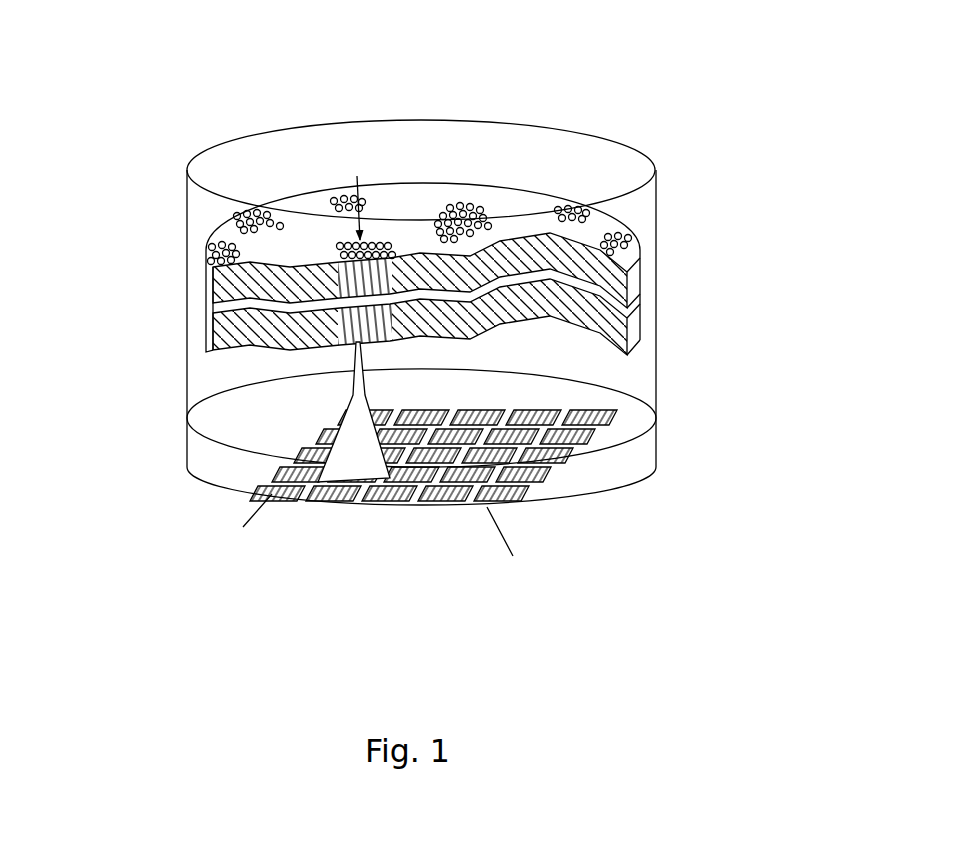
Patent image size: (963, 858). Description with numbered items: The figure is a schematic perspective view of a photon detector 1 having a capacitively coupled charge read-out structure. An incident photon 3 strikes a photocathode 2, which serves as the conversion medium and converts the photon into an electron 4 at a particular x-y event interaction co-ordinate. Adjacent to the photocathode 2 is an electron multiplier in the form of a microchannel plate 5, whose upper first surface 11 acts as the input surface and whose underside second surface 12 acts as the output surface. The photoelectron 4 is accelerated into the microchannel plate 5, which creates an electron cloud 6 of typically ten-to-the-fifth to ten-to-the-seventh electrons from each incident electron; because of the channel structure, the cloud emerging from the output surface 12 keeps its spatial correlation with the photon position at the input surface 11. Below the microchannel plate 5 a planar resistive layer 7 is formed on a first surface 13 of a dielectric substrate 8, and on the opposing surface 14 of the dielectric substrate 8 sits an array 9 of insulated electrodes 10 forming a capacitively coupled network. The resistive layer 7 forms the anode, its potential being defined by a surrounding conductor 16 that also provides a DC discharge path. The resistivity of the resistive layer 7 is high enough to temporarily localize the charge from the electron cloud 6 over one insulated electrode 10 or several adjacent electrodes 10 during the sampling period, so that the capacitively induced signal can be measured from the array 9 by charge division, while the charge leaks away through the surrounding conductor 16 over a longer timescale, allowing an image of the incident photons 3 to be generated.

The photon detector 1 is at (150, 90).
The photocathode 2 is at (570, 150).
The incident photon 3 is at (355, 170).
The electron 4 is at (367, 218).
The microchannel plate 5 is at (207, 247).
The electron cloud 6 is at (358, 384).
The resistive layer 7 is at (248, 411).
The dielectric substrate 8 is at (600, 458).
The array of insulated electrodes 9 is at (422, 508).
The insulated electrode 10 is at (380, 500).
The first surface of microchannel plate 11 is at (303, 222).
The second surface of microchannel plate 12 is at (232, 355).
The first surface of dielectric substrate 13 is at (628, 410).
The opposing surface of dielectric substrate 14 is at (603, 500).
The surrounding conductor 16 is at (236, 450).